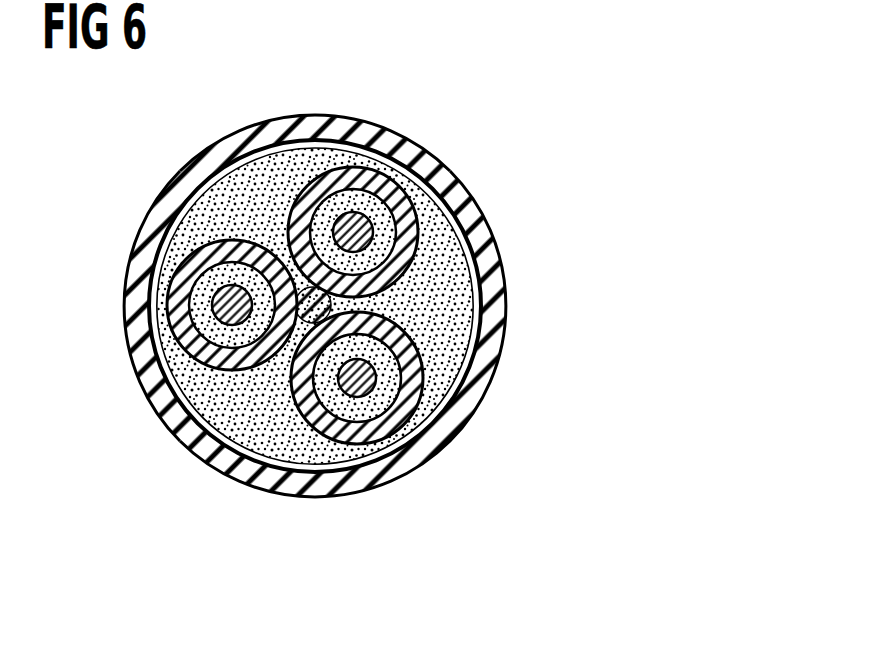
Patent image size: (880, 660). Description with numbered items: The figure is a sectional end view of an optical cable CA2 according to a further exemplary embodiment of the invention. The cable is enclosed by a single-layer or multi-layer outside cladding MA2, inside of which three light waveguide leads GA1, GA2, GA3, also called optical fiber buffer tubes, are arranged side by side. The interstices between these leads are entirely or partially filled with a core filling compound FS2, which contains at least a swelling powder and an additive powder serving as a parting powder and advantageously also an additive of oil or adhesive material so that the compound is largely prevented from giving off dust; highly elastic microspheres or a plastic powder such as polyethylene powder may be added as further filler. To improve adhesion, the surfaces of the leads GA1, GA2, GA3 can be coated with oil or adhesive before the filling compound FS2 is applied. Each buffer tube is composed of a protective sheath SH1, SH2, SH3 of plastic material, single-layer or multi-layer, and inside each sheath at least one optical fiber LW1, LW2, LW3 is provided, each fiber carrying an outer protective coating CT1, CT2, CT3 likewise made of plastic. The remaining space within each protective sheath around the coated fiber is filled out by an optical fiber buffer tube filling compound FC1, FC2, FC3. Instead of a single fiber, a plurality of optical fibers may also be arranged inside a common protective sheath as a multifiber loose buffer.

The optical cable CA2 is at (316, 302).
The outside cladding MA2 is at (483, 373).
The light waveguide lead GA1 is at (297, 125).
The light waveguide lead GA2 is at (185, 170).
The light waveguide lead GA3 is at (480, 315).
The protective sheath SH1 is at (435, 158).
The protective sheath SH2 is at (153, 203).
The protective sheath SH3 is at (427, 450).
The protective coating CT1 is at (473, 197).
The protective coating CT2 is at (135, 363).
The protective coating CT3 is at (362, 460).
The optical fiber buffer tube filling compound FC1 is at (372, 150).
The optical fiber buffer tube filling compound FC2 is at (130, 257).
The optical fiber buffer tube filling compound FC3 is at (312, 470).
The optical fiber LW1 is at (470, 242).
The optical fiber LW2 is at (128, 318).
The optical fiber LW3 is at (463, 425).
The core filling compound FS2 is at (190, 437).